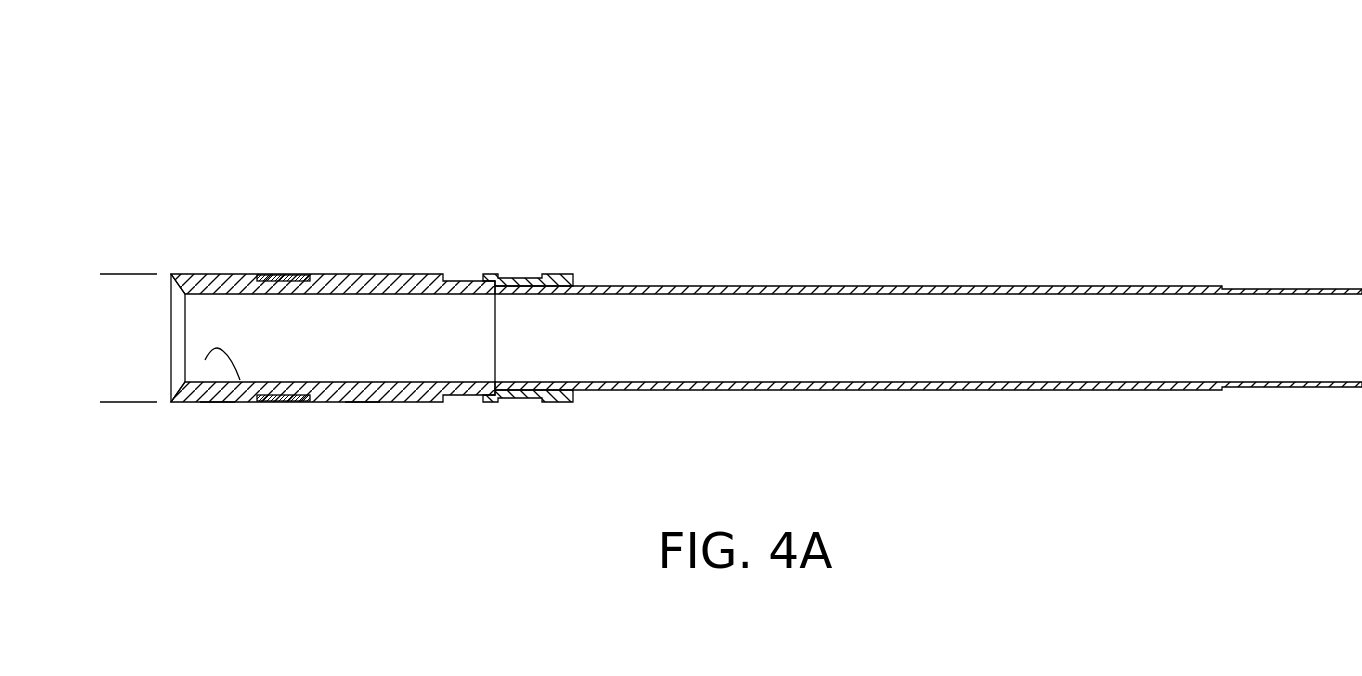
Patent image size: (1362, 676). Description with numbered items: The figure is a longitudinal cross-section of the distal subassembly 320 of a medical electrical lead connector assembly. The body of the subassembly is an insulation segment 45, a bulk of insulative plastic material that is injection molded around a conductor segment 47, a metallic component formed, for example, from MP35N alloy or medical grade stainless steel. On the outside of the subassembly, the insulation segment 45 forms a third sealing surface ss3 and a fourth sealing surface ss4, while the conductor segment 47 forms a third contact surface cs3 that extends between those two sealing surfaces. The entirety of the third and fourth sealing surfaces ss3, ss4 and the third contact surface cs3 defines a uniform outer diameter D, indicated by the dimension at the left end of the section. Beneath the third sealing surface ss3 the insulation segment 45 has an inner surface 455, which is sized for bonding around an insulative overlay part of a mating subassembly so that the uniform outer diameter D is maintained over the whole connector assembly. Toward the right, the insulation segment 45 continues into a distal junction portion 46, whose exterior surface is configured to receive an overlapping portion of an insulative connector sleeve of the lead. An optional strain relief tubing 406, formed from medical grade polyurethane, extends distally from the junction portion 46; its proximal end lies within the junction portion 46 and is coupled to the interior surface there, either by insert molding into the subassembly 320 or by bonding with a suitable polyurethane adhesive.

The distal subassembly 320 is at (253, 148).
The insulation segment 45 is at (247, 273).
The conductor segment 47 is at (290, 273).
The inner surface 455 is at (205, 360).
The distal junction portion 46 is at (573, 422).
The strain relief tubing 406 is at (718, 285).
The third sealing surface ss3 is at (217, 418).
The third contact surface cs3 is at (289, 418).
The fourth sealing surface ss4 is at (363, 418).
The uniform outer diameter D is at (127, 290).